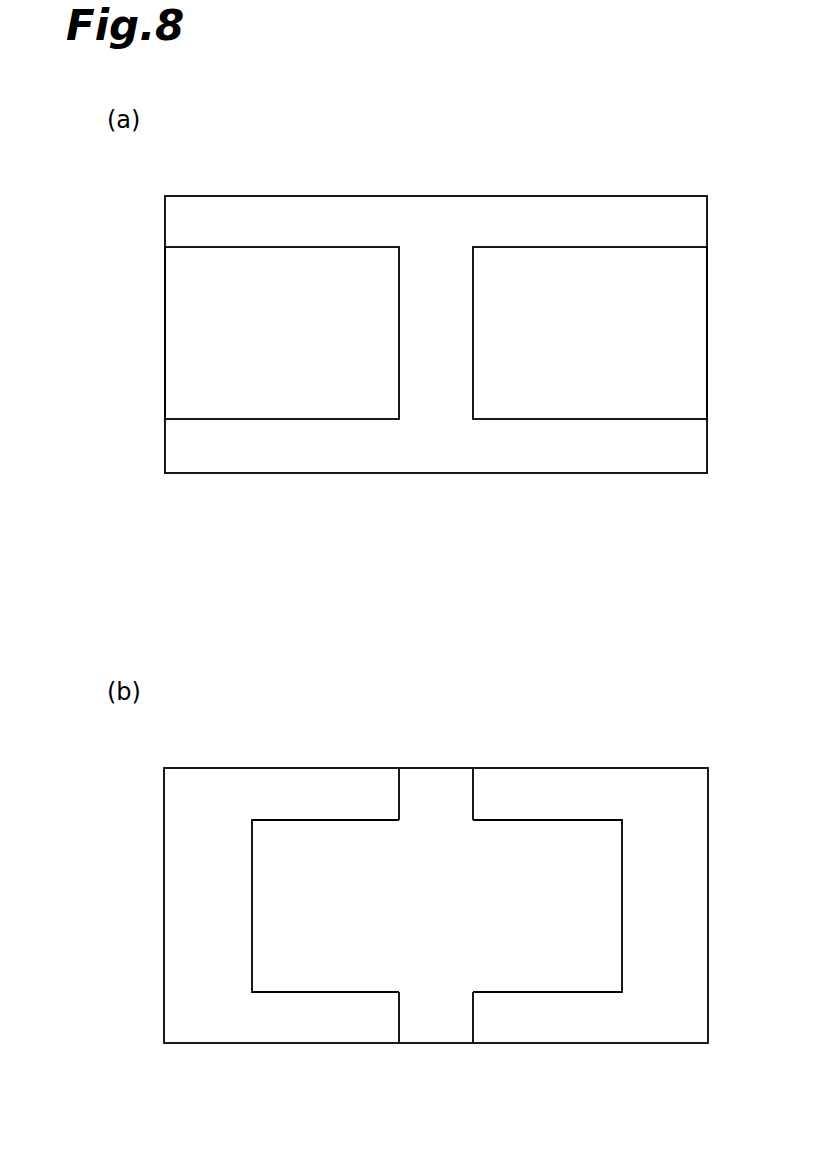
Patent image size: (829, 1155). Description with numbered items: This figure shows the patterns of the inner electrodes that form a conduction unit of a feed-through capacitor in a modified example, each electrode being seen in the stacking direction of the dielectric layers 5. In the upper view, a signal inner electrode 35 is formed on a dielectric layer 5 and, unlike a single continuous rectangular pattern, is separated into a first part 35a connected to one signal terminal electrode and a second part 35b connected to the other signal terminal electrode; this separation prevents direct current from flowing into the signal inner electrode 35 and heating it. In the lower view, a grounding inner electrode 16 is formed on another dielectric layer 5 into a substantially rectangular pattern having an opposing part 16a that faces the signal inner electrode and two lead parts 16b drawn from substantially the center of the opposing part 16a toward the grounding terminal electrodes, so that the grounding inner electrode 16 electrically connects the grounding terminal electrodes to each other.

The dielectric layer 5 is at (603, 195).
The signal inner electrode 35 is at (436, 343).
The first part 35a is at (272, 400).
The second part 35b is at (595, 397).
The grounding inner electrode 16 is at (432, 915).
The opposing part 16a is at (305, 970).
The lead part 16b is at (460, 790).